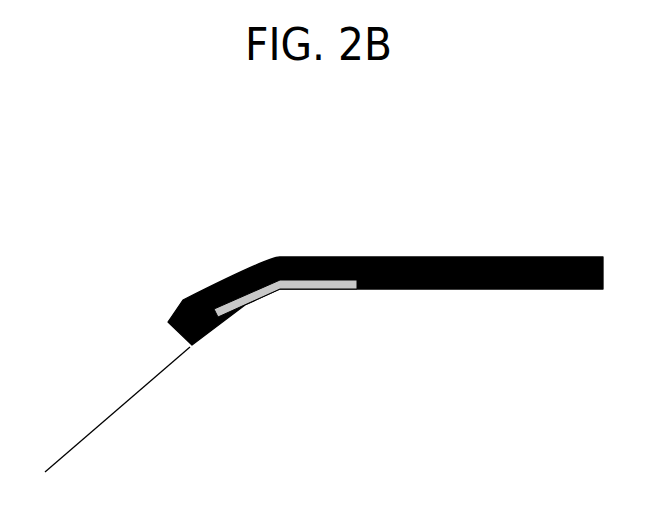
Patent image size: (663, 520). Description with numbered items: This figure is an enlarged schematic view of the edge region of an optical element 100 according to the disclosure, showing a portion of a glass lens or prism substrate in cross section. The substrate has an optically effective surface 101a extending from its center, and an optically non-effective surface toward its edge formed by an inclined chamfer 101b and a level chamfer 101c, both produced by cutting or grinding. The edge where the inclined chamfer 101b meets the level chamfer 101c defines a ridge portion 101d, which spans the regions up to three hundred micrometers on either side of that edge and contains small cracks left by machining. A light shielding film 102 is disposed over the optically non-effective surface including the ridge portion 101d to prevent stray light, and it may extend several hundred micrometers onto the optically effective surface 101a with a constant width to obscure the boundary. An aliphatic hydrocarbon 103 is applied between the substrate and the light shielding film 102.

The display device 100 is at (72, 149).
The optically effective surface 101a is at (78, 438).
The inclined chamfer 101b is at (243, 312).
The level chamfer 101c is at (468, 289).
The ridge portion 101d is at (358, 308).
The light shielding film 102 is at (423, 265).
The aliphatic hydrocarbon 103 is at (303, 283).